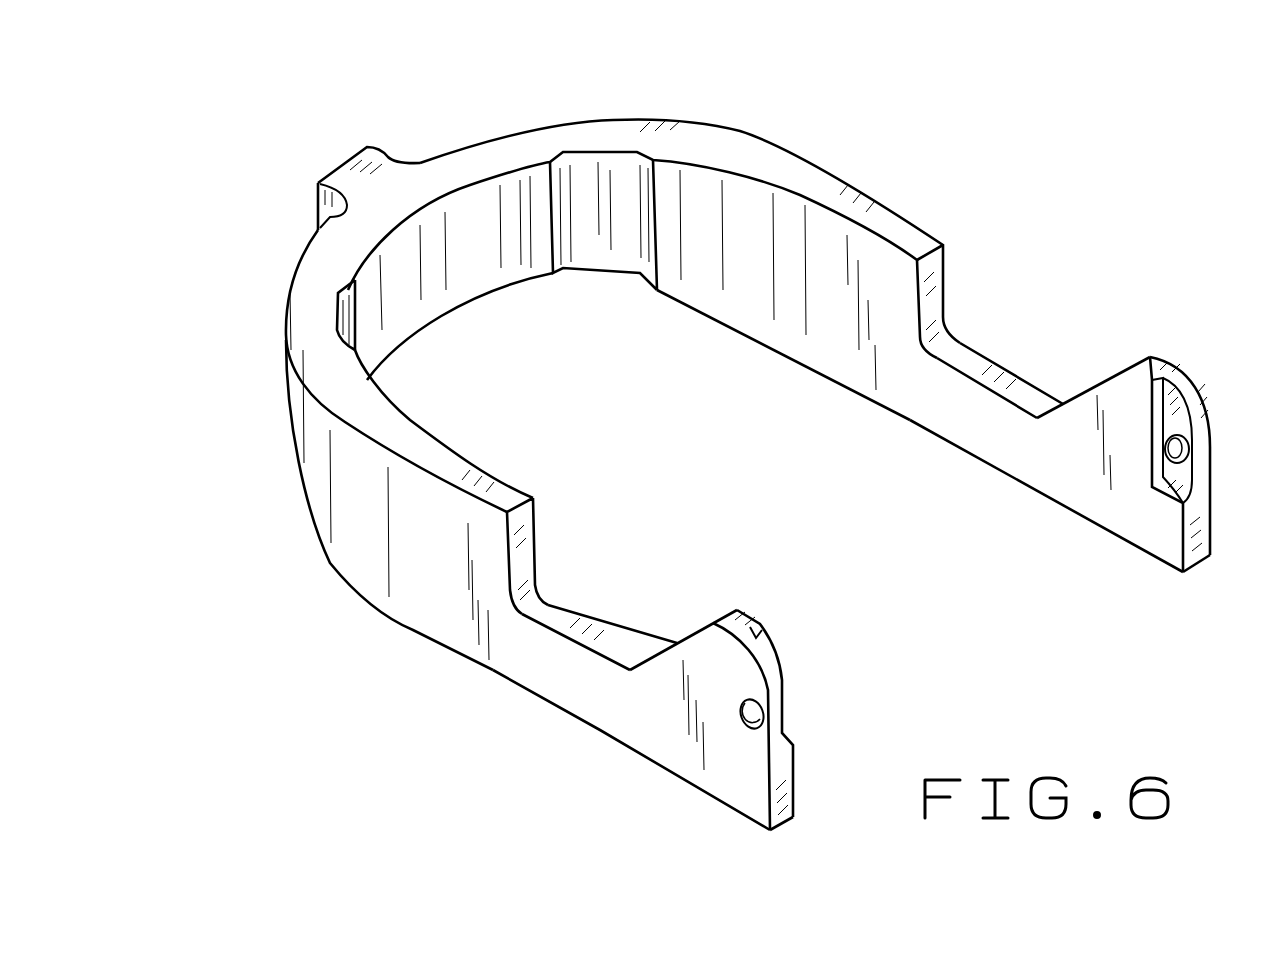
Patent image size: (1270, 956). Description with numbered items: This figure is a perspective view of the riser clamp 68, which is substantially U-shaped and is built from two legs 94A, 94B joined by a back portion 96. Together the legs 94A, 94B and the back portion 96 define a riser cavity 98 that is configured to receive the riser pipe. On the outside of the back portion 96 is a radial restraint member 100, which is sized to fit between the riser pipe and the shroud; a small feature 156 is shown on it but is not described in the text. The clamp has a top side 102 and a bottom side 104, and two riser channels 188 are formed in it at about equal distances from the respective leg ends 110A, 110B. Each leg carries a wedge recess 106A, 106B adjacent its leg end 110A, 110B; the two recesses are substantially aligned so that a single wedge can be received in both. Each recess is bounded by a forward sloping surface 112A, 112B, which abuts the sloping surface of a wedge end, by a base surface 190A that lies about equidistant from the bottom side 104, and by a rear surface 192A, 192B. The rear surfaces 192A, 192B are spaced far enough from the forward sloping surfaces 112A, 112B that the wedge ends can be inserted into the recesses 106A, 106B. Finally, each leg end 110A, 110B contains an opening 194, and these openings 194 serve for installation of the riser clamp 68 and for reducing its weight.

The riser clamp 68 is at (744, 98).
The back portion 96 is at (487, 153).
The radial restraint member 100 is at (367, 167).
The recess 156 is at (317, 224).
The riser channel 188 is at (612, 186).
The riser cavity 98 is at (395, 308).
The top side 102 is at (808, 187).
The bottom side 104 is at (732, 317).
The rear surface 192A is at (518, 523).
The rear surface 192B is at (946, 272).
The wedge recess 106A is at (562, 570).
The wedge recess 106B is at (978, 318).
The base surface 190A is at (580, 630).
The forward sloping surface 112A is at (700, 630).
The forward sloping surface 112B is at (1095, 380).
The leg end 110A is at (750, 617).
The leg end 110B is at (1148, 357).
The opening 194 is at (751, 706).
The leg 94A is at (760, 810).
The leg 94B is at (1157, 543).